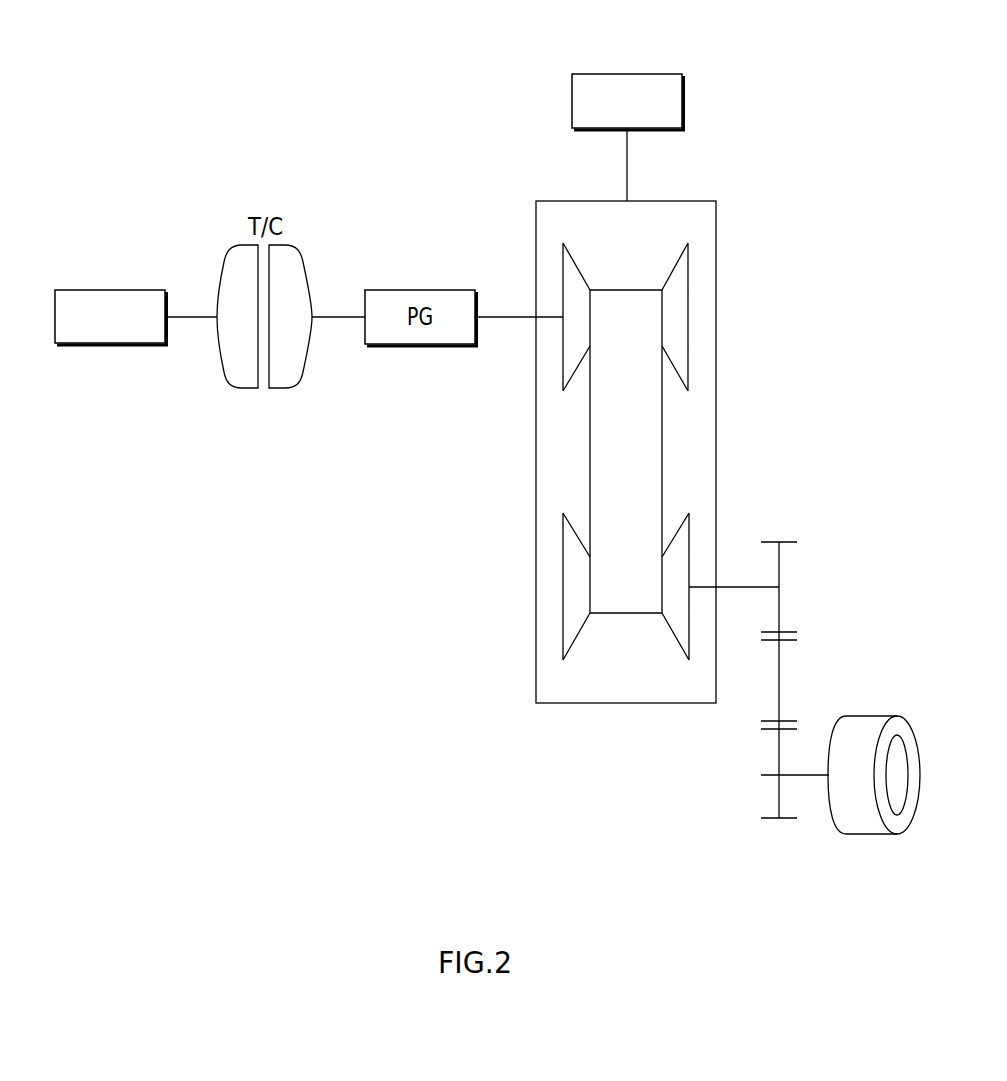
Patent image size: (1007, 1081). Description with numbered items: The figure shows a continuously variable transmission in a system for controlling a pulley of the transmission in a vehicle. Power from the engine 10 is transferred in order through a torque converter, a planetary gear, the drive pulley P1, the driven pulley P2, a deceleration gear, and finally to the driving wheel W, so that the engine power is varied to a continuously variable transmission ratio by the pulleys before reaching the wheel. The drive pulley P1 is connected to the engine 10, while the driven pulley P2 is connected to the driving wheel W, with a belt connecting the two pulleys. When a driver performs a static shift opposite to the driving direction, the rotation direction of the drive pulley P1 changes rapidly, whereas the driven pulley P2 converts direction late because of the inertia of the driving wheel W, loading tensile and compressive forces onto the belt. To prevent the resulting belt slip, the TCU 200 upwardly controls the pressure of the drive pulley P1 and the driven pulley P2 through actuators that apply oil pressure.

The engine 10 is at (108, 290).
The TCU 200 is at (626, 74).
The drive pulley P1 is at (688, 316).
The driven pulley P2 is at (563, 583).
The driving wheel W is at (873, 716).